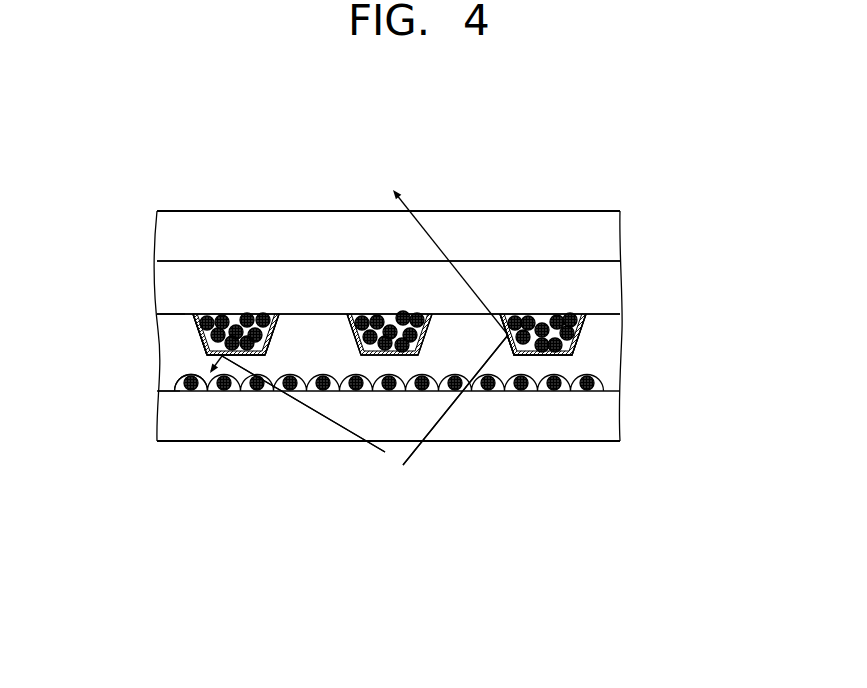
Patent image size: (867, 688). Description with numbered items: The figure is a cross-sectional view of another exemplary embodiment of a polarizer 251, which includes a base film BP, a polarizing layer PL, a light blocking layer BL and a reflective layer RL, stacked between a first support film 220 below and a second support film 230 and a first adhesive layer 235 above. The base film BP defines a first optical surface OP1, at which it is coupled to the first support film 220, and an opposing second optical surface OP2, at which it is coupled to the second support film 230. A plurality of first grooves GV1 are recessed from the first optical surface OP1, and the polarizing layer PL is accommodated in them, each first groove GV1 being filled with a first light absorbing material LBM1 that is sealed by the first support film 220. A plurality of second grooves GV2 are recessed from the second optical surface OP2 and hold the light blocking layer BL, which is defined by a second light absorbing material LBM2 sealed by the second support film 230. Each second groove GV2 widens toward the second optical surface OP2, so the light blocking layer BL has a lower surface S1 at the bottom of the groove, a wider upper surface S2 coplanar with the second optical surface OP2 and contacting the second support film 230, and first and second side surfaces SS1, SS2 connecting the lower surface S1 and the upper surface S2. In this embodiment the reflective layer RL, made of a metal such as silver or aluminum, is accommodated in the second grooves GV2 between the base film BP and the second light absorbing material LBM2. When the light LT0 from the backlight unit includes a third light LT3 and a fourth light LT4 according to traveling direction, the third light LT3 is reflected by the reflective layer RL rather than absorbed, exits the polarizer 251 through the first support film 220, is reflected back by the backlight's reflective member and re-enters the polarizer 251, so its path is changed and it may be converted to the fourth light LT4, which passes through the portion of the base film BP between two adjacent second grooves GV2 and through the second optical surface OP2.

The polarizer 251 is at (592, 143).
The first adhesive layer 235 is at (612, 235).
The second support film 230 is at (612, 283).
The first support film 220 is at (612, 413).
The light blocking layer BL is at (708, 315).
The second light absorbing material LBM2 is at (583, 317).
The first light absorbing material LBM1 is at (553, 391).
The base film BP is at (612, 372).
The polarizing layer PL is at (628, 526).
The first groove GV1 is at (184, 391).
The second groove GV2 is at (540, 313).
The first side surface SS1 is at (199, 333).
The second side surface SS2 is at (283, 316).
The lower surface S1 is at (214, 356).
The upper surface S2 is at (210, 314).
The first optical surface OP1 is at (168, 391).
The second optical surface OP2 is at (172, 313).
The third light LT3 is at (348, 433).
The fourth light LT4 is at (413, 455).
The light LT0 is at (438, 548).
The reflective layer RL is at (508, 337).